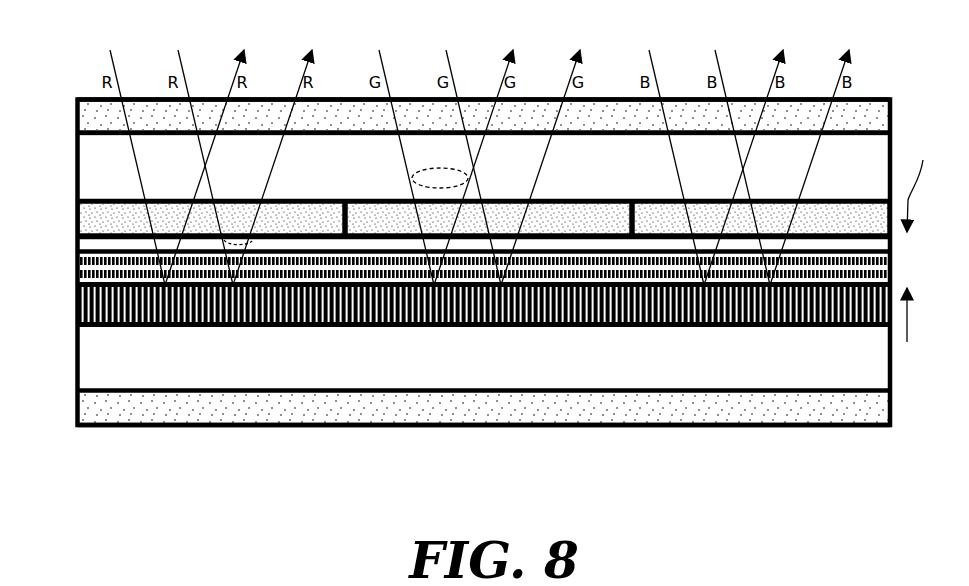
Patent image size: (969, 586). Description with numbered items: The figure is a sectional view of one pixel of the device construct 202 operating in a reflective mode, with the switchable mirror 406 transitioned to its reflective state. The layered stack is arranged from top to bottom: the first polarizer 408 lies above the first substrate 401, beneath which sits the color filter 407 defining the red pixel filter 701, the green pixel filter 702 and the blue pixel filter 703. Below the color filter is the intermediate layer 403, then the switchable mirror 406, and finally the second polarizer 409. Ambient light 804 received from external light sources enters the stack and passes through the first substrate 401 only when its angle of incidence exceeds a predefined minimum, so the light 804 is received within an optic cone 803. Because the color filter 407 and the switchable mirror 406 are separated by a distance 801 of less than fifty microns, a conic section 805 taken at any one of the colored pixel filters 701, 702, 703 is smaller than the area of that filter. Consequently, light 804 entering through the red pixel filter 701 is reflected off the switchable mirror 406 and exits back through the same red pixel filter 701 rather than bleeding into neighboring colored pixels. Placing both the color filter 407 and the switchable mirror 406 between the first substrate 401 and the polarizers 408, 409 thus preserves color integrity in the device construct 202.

The device construct 202 is at (764, 460).
The first substrate 401 is at (87, 150).
The liquid crystal layer 403 is at (87, 247).
The switchable mirror 406 is at (293, 325).
The color filter 407 is at (85, 218).
The first polarizer 408 is at (337, 112).
The second polarizer 409 is at (444, 408).
The red pixel filter 701 is at (113, 225).
The green pixel filter 702 is at (392, 223).
The blue pixel filter 703 is at (667, 223).
The distance 801 is at (917, 238).
The optic cone 803 is at (432, 168).
The ambient light 804 is at (113, 58).
The conic section 805 is at (250, 243).